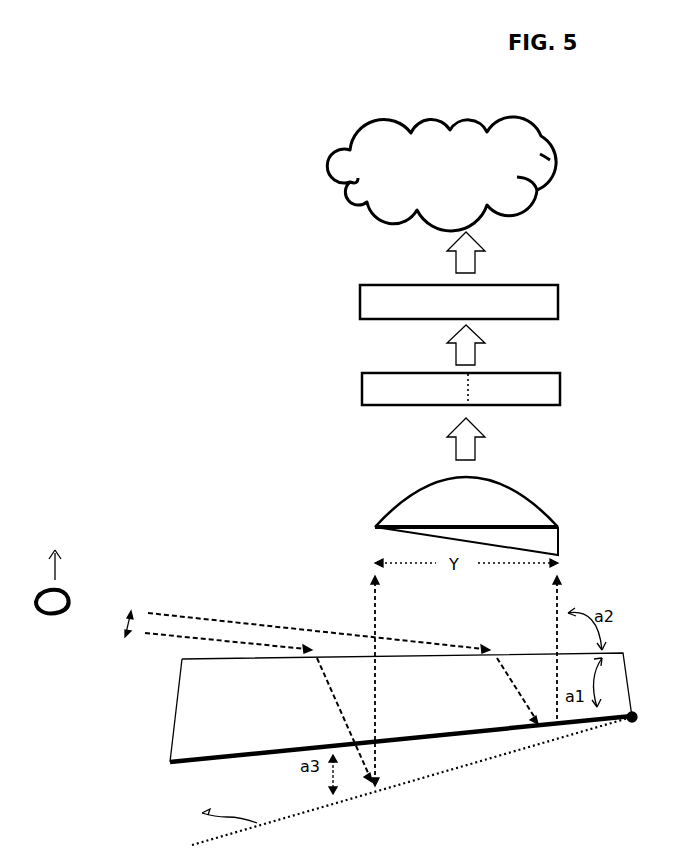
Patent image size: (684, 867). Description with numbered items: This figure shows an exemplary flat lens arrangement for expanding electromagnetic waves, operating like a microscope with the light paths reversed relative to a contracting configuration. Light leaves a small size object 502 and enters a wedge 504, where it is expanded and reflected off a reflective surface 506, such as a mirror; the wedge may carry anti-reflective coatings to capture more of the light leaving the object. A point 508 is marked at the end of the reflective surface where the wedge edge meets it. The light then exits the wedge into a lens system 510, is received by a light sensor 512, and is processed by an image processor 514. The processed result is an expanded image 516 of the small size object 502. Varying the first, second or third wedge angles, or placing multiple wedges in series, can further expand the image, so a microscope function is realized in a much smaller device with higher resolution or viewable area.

The small size object 502 is at (58, 569).
The wedge 504 is at (178, 677).
The reflective surface 506 is at (188, 770).
The extended reflection line / pivot 508 is at (617, 733).
The lens system 510 is at (373, 523).
The light sensor 512 is at (355, 388).
The image processor 514 is at (353, 303).
The expanded image 516 is at (419, 174).